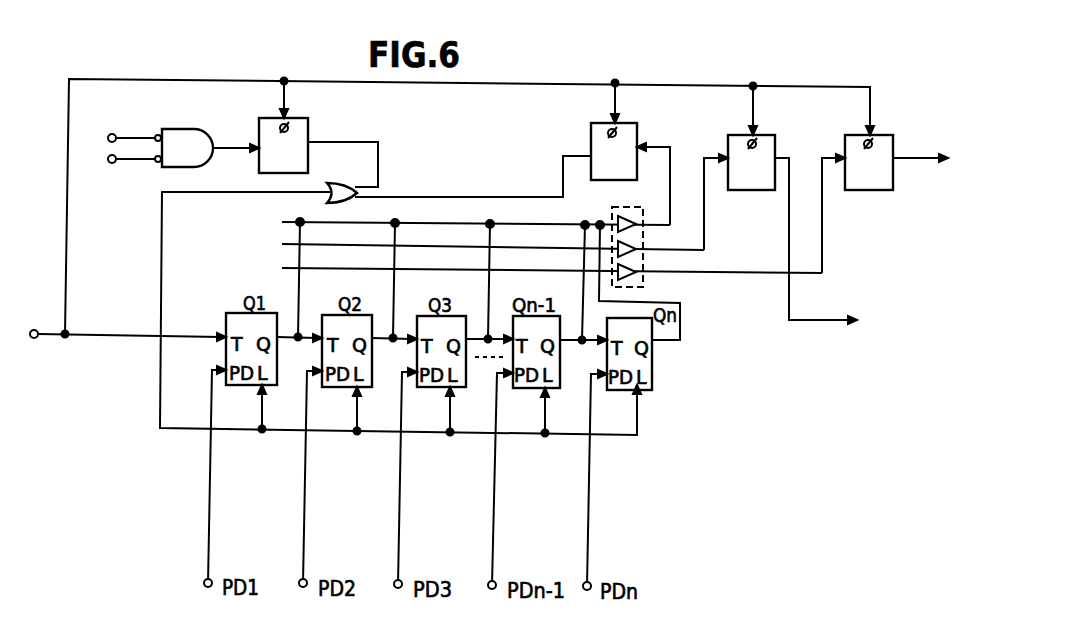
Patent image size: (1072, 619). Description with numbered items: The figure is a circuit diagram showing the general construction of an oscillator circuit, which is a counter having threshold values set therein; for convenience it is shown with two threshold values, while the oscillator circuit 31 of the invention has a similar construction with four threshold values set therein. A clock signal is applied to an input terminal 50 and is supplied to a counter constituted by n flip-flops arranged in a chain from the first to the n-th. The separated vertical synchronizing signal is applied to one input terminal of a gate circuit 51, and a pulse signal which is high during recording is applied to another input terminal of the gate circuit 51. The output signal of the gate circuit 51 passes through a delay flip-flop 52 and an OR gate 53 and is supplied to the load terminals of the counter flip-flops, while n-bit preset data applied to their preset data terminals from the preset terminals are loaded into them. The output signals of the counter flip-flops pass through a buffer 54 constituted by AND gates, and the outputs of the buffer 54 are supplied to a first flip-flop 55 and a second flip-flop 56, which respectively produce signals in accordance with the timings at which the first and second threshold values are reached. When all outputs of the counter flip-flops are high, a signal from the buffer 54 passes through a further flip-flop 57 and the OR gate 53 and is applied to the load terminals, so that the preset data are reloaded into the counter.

The oscillator circuit 31 is at (85, 59).
The input terminal 50 is at (34, 329).
The gate circuit 51 is at (199, 128).
The delay flip-flop 52 is at (295, 118).
The OR gate 53 is at (340, 181).
The buffer 54 is at (621, 208).
The flip-flop 55 is at (762, 133).
The flip-flop 56 is at (880, 133).
The flip-flop 57 is at (626, 121).